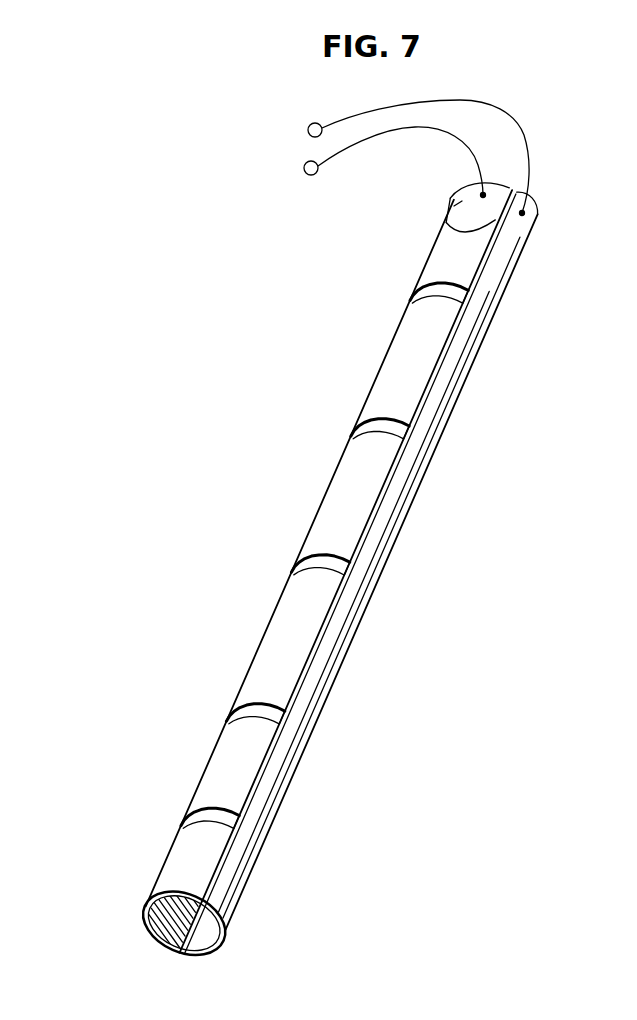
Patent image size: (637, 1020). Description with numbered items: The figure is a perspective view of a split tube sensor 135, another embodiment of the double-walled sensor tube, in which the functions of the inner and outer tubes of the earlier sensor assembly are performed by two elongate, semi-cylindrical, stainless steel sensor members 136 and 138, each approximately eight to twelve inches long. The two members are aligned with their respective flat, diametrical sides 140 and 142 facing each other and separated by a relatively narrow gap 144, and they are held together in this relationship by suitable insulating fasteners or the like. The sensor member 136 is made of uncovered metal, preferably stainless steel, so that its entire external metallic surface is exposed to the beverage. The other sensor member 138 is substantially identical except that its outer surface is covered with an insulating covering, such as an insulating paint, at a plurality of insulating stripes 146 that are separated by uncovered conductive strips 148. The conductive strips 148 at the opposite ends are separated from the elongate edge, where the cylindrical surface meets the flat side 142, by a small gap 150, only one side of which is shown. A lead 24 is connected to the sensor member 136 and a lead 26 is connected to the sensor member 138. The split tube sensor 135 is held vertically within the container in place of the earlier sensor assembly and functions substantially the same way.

The lead 24 is at (497, 106).
The lead 26 is at (458, 140).
The split tube sensor 135 is at (316, 304).
The sensor member 136 is at (385, 532).
The sensor member 138 is at (320, 520).
The flat diametrical side 140 is at (198, 967).
The flat diametrical side 142 is at (143, 930).
The gap 144 is at (268, 760).
The insulating stripes 146 is at (265, 652).
The conductive strips 148 is at (352, 437).
The small gap 150 is at (453, 323).